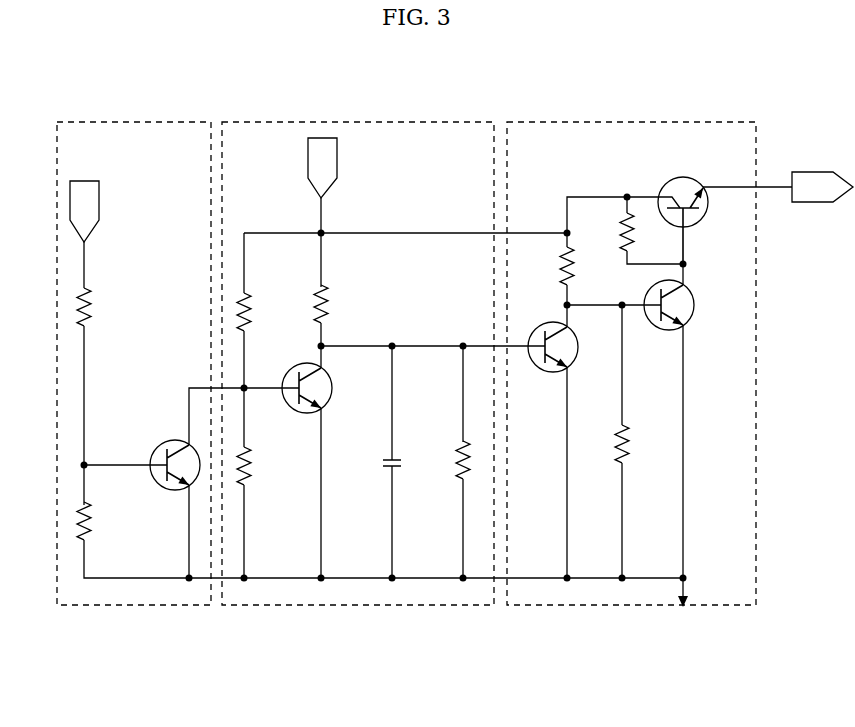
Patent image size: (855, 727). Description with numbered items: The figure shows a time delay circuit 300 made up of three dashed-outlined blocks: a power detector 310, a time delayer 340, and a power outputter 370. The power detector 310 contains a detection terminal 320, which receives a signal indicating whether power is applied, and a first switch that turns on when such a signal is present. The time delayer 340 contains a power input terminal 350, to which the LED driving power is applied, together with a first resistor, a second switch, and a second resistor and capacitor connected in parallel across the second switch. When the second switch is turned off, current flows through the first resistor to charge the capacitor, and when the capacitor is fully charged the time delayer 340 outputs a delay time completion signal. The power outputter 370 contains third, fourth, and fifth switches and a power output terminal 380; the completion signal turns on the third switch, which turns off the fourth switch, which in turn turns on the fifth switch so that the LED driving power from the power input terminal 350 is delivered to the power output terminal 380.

The time delay circuit 300 is at (67, 69).
The power detector 310 is at (132, 122).
The detection terminal 320 is at (99, 199).
The time delayer 340 is at (371, 122).
The power input terminal 350 is at (337, 154).
The power outputter 370 is at (604, 122).
The power output terminal 380 is at (810, 172).